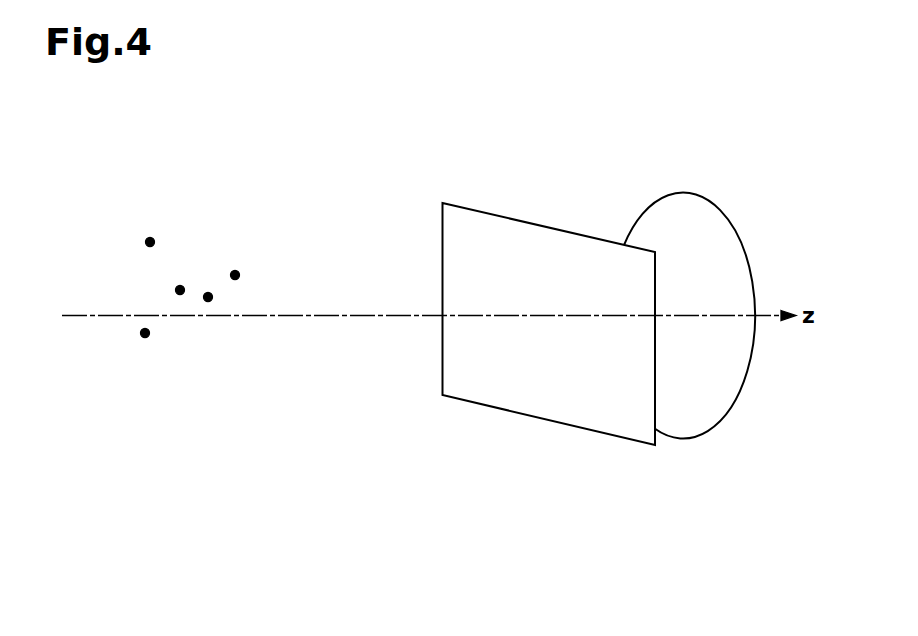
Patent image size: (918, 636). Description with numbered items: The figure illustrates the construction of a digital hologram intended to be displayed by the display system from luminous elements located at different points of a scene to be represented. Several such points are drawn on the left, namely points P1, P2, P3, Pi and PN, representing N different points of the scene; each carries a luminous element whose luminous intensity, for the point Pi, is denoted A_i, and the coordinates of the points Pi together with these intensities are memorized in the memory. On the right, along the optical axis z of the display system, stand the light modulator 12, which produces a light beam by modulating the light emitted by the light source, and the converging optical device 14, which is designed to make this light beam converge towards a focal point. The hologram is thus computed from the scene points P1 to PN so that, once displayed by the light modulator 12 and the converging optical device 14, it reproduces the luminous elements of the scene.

The first point of the scene P1 is at (149, 238).
The second point of the scene P2 is at (235, 271).
The third point of the scene P3 is at (212, 299).
The i-th point of the scene Pi is at (178, 287).
The N-th point of the scene PN is at (141, 333).
The light modulator 12 is at (522, 220).
The converging optical device 14 is at (705, 198).